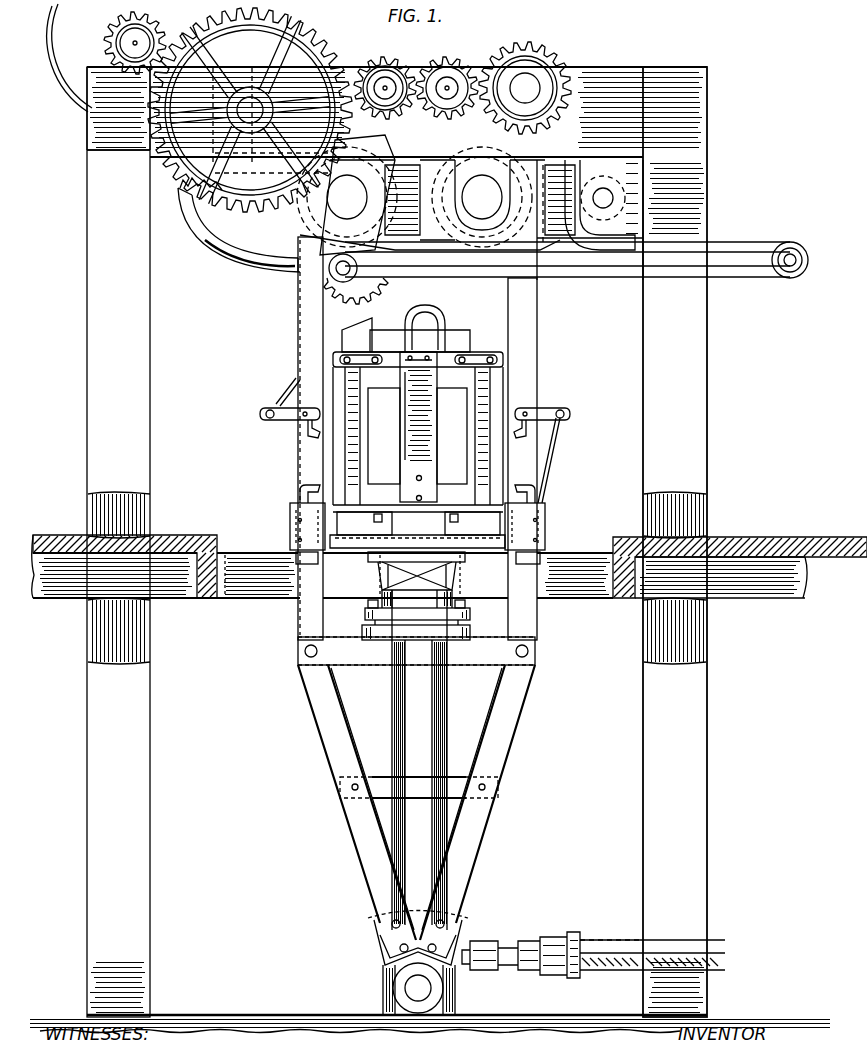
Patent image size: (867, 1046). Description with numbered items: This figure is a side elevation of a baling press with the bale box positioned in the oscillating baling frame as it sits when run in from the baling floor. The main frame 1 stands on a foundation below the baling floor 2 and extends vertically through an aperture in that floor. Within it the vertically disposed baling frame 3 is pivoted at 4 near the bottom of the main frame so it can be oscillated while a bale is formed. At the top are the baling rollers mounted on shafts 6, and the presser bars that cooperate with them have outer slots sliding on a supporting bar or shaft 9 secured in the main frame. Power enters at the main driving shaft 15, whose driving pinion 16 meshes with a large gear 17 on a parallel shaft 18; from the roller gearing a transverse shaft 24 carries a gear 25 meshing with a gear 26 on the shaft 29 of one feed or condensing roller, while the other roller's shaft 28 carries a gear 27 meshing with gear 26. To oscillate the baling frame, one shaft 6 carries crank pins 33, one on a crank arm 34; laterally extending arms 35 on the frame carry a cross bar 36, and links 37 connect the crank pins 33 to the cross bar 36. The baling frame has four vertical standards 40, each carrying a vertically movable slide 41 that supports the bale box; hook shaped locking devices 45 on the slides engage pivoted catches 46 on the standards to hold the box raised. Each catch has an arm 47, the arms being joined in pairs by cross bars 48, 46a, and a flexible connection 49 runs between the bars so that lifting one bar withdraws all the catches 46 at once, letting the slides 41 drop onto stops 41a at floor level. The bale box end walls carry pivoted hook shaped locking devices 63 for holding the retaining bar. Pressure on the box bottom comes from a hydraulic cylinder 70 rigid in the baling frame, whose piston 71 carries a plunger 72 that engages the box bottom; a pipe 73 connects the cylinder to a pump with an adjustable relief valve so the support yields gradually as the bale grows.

The main frame 1 is at (612, 86).
The baling floor 2 is at (190, 540).
The baling frame 3 is at (512, 733).
The pivot 4 is at (420, 988).
The shaft 6 is at (436, 195).
The supporting bar or shaft 9 is at (605, 196).
The main driving shaft 15 is at (135, 48).
The driving pinion 16 is at (110, 25).
The large gear 17 is at (152, 120).
The shaft 18 is at (222, 128).
The transverse shaft 24 is at (535, 82).
The gear 25 is at (555, 30).
The gear 26 is at (460, 70).
The gear 27 is at (380, 66).
The shaft 28 is at (390, 84).
The shaft 29 is at (447, 84).
The crank pin 33 is at (356, 291).
The crank arm 34 is at (300, 278).
The laterally extending arm 35 is at (722, 243).
The cross bar 36 is at (790, 242).
The link 37 is at (625, 268).
The standard 40 is at (298, 461).
The slide 41 is at (290, 528).
The stop or projection 41a is at (316, 562).
The hook shaped locking device 45 is at (302, 494).
The pivoted catch 46 is at (308, 430).
The latch pivot 46a is at (565, 414).
The arm 47 is at (262, 416).
The cross bar 48 is at (266, 412).
The flexible connection 49 is at (292, 386).
The hook shaped locking device 63 is at (425, 335).
The hydraulic cylinder 70 is at (419, 760).
The piston 71 is at (390, 607).
The plunger 72 is at (455, 575).
The pipe 73 is at (605, 945).